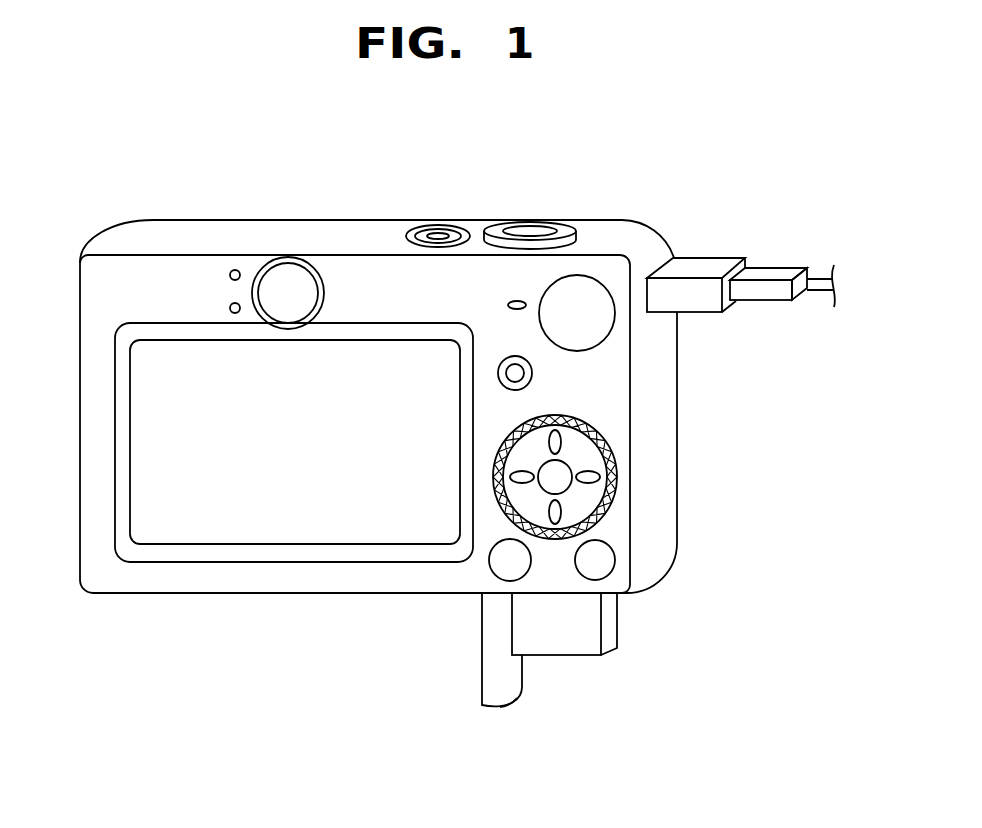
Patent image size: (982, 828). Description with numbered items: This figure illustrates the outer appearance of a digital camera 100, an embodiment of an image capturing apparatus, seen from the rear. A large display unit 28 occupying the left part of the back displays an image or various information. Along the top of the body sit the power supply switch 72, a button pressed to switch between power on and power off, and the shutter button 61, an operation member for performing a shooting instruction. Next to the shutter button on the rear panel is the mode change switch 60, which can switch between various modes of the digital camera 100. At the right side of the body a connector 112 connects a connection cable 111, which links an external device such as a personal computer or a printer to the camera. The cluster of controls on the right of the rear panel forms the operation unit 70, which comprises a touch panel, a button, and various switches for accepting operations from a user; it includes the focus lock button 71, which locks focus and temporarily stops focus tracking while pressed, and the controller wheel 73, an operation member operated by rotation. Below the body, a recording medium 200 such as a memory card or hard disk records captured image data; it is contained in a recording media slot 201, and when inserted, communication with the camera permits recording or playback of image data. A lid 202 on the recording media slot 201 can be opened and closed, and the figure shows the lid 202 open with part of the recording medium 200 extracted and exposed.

The digital camera 100 is at (163, 642).
The display unit 28 is at (188, 362).
The power supply switch 72 is at (437, 227).
The focus lock button 71 is at (515, 372).
The shutter button 61 is at (527, 226).
The mode change switch 60 is at (585, 288).
The connector 112 is at (698, 268).
The connection cable 111 is at (770, 278).
The controller wheel 73 is at (522, 422).
The operation unit 70 is at (533, 249).
The recording medium 200 is at (577, 647).
The recording media slot 201 is at (528, 597).
The lid 202 is at (526, 692).